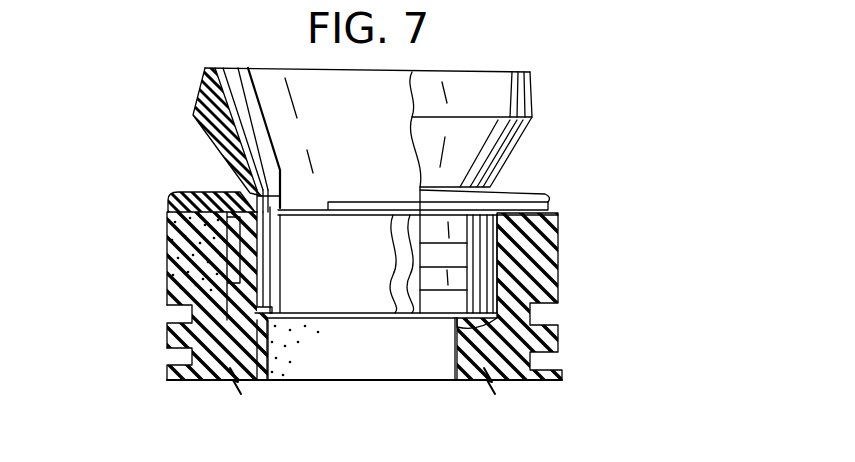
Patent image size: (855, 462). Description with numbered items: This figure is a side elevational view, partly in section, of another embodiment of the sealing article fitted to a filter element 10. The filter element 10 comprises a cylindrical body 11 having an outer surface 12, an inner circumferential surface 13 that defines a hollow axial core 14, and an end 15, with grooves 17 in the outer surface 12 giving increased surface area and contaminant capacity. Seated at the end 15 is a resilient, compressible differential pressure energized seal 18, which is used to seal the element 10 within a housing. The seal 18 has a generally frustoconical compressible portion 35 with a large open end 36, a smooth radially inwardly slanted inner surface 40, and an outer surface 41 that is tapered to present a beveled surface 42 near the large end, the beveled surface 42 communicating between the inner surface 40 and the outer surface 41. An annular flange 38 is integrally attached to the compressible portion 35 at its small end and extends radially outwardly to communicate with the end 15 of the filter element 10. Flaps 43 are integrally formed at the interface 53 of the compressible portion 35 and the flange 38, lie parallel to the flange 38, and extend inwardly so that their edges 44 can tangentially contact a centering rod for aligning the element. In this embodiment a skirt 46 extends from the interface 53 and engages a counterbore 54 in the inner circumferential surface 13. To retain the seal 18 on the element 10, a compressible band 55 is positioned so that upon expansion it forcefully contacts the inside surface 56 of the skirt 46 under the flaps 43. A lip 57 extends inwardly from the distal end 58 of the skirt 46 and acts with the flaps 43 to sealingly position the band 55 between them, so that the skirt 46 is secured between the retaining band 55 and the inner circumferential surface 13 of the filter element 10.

The filter element 10 is at (582, 320).
The cylindrical structure or body 11 is at (562, 378).
The outer surface 12 is at (167, 333).
The inner circumferential surface 13 is at (263, 323).
The hollow axial core 14 is at (395, 362).
The end 15 is at (560, 246).
The grooves 17 is at (188, 357).
The differential pressure energized seal 18 is at (540, 97).
The compressible portion 35 is at (205, 80).
The large open end 36 is at (238, 67).
The annular flange 38 is at (522, 199).
The inner surface 40 is at (243, 139).
The outer surface 41 is at (512, 142).
The beveled surface 42 is at (517, 90).
The flaps 43 is at (272, 200).
The edges 44 is at (278, 203).
The skirt 46 is at (243, 272).
The interface 53 is at (242, 182).
The counterbore 54 is at (170, 213).
The inside surface 56 is at (225, 250).
The compressible band 55 is at (257, 298).
The lip 57 is at (270, 320).
The distal end 58 is at (243, 293).